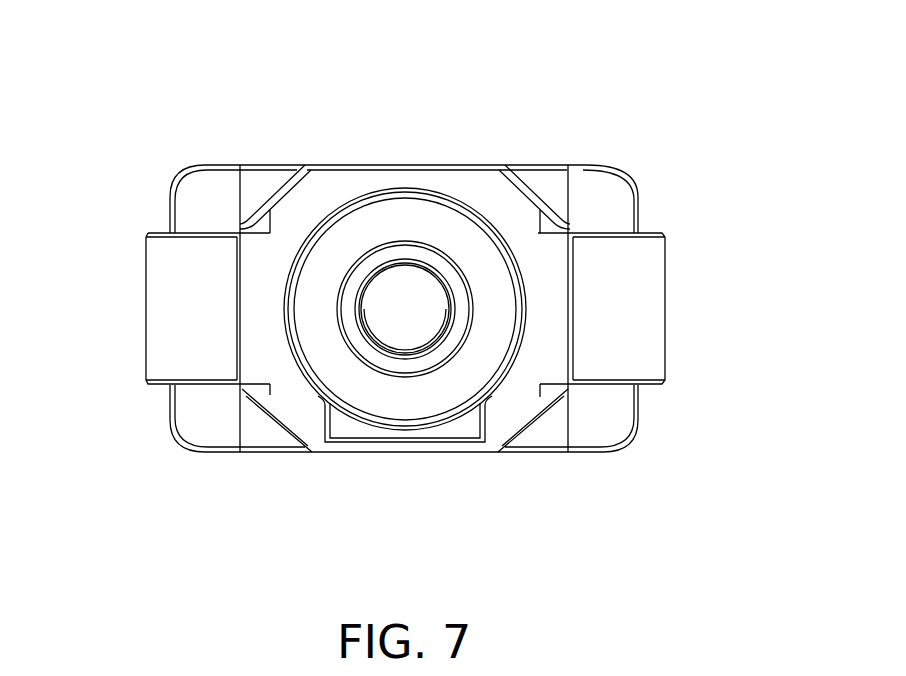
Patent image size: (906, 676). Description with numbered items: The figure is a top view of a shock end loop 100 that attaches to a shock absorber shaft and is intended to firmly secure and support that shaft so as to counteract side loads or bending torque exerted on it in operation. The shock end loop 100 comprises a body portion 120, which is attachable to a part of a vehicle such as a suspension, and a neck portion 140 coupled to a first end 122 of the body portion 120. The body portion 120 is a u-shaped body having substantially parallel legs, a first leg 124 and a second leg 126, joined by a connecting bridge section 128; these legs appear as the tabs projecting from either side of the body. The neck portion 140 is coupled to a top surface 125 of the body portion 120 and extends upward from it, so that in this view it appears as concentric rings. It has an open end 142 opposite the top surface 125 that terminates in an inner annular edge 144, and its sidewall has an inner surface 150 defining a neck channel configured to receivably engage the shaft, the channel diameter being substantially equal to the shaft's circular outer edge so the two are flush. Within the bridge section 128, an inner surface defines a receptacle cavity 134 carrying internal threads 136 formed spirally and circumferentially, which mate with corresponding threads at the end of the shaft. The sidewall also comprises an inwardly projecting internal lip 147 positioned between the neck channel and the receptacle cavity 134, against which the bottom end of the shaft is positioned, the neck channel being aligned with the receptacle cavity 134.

The shock end loop 100 is at (275, 72).
The body portion 120 is at (622, 461).
The first end 122 is at (331, 180).
The first leg 124 is at (158, 322).
The top surface 125 is at (555, 262).
The second leg 126 is at (650, 330).
The bridge section 128 is at (578, 450).
The receptacle cavity 134 is at (414, 347).
The internal threads 136 is at (360, 283).
The neck portion 140 is at (483, 196).
The open end 142 is at (380, 324).
The inner annular edge 144 is at (410, 241).
The inwardly projecting internal lip 147 is at (447, 318).
The inner surface 150 is at (385, 364).